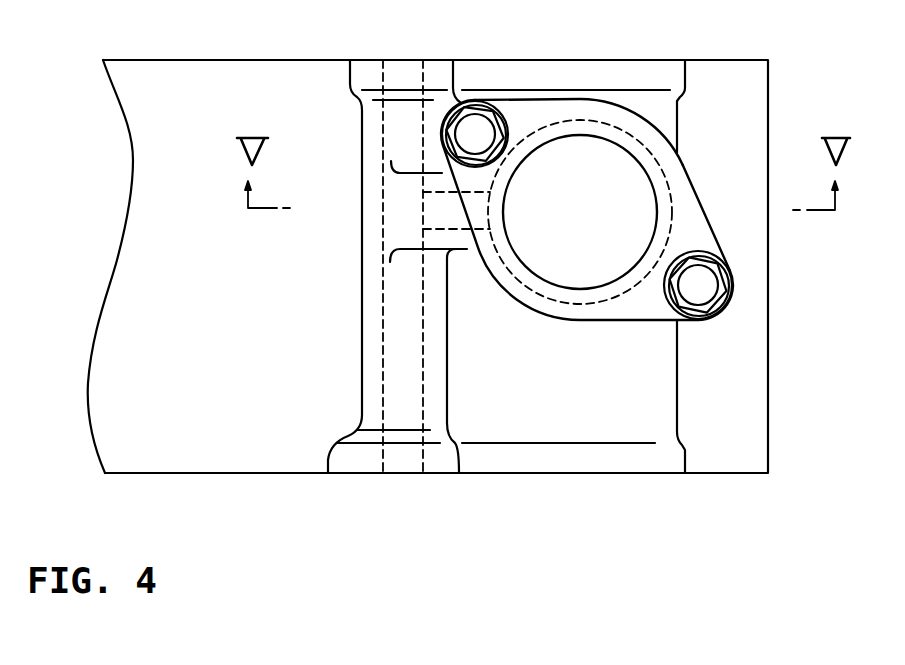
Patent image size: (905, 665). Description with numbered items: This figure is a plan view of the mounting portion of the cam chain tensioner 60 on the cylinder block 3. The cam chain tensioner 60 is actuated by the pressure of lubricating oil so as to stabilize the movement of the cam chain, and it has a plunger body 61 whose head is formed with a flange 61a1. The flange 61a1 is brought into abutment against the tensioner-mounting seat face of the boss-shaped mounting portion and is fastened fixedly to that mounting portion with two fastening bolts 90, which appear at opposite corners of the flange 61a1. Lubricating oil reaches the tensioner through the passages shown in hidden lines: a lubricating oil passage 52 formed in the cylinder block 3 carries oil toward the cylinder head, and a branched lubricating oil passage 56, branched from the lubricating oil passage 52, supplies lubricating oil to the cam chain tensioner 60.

The cylinder block 3 is at (755, 405).
The lubricating oil passage 52 is at (380, 313).
The branched lubricating oil passage 56 is at (458, 222).
The cam chain tensioner 60 is at (707, 167).
The plunger body 61 is at (630, 128).
The flange 61a1 is at (708, 242).
The fastening bolts 90 is at (476, 120).